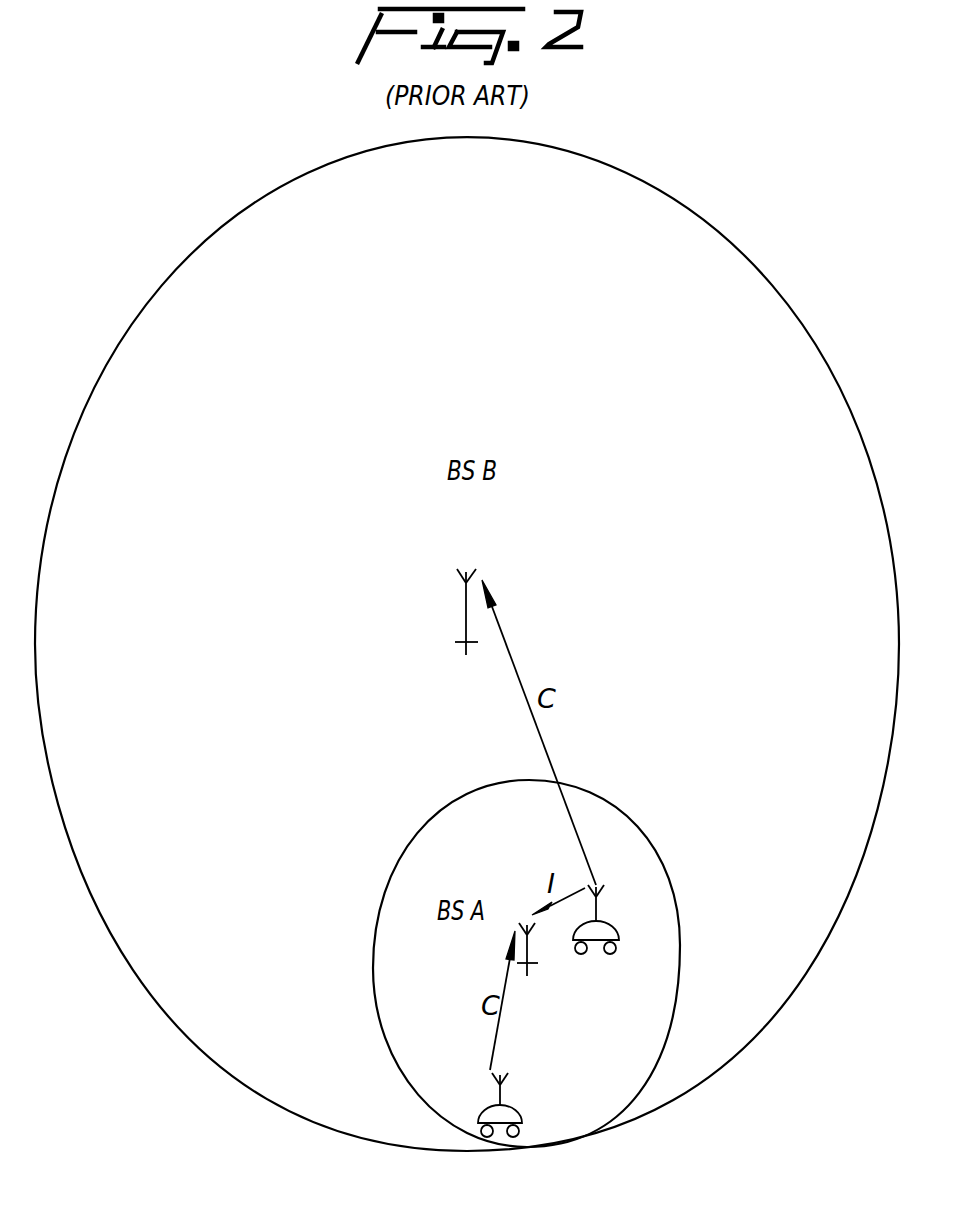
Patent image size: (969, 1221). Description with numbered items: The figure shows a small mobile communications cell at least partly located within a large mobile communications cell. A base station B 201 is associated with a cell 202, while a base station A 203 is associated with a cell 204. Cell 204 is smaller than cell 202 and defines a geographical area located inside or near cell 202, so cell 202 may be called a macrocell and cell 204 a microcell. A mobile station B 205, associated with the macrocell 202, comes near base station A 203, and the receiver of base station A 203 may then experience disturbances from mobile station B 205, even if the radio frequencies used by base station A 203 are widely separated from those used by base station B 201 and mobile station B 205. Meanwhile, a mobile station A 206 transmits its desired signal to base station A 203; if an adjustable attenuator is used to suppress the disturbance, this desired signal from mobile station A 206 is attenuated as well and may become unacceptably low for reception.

The base station B 201 is at (466, 608).
The cell 202 is at (791, 309).
The base station A 203 is at (528, 952).
The cell 204 is at (645, 843).
The mobile station B 205 is at (624, 939).
The mobile station A 206 is at (522, 1112).